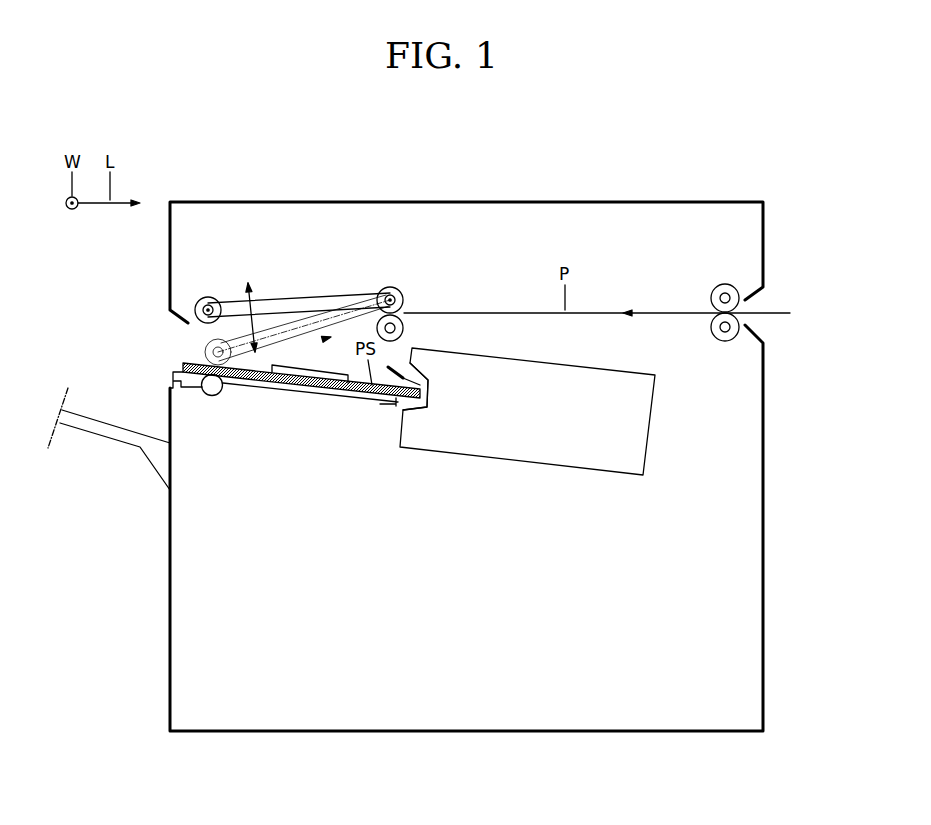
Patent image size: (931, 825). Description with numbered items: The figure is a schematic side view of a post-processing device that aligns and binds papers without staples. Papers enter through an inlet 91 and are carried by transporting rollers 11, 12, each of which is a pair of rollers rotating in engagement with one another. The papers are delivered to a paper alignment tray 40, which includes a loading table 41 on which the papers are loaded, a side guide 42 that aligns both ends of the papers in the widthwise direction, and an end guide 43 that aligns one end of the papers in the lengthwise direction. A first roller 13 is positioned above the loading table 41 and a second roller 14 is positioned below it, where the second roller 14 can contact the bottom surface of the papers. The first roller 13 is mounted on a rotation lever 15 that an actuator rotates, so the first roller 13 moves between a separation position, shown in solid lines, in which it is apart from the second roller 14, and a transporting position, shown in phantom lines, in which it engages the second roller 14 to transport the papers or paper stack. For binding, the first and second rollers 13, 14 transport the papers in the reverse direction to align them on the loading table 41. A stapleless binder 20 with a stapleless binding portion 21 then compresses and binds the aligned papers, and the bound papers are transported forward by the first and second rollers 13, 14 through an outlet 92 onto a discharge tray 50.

The transporting roller 11 is at (725, 284).
The transporting roller 12 is at (390, 286).
The first roller 13 is at (208, 296).
The second roller 14 is at (212, 397).
The rotation lever 15 is at (300, 302).
The stapleless binder 20 is at (567, 483).
The stapleless binding portion 21 is at (428, 396).
The paper alignment tray 40 is at (283, 400).
The loading table 41 is at (380, 404).
The side guide 42 is at (333, 400).
The end guide 43 is at (400, 362).
The discharge tray 50 is at (100, 434).
The inlet 91 is at (766, 300).
The outlet 92 is at (167, 349).